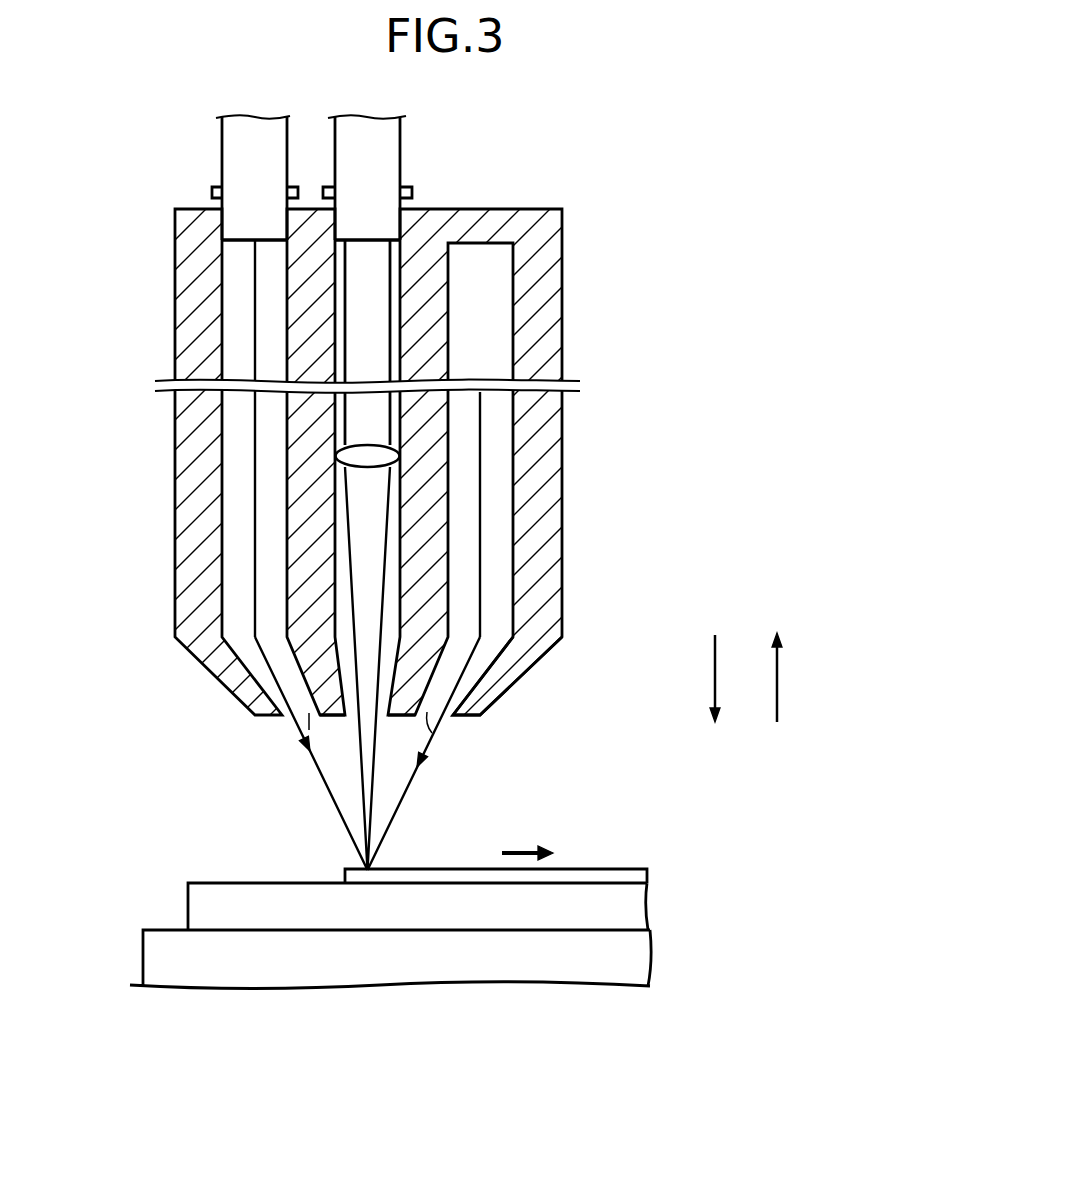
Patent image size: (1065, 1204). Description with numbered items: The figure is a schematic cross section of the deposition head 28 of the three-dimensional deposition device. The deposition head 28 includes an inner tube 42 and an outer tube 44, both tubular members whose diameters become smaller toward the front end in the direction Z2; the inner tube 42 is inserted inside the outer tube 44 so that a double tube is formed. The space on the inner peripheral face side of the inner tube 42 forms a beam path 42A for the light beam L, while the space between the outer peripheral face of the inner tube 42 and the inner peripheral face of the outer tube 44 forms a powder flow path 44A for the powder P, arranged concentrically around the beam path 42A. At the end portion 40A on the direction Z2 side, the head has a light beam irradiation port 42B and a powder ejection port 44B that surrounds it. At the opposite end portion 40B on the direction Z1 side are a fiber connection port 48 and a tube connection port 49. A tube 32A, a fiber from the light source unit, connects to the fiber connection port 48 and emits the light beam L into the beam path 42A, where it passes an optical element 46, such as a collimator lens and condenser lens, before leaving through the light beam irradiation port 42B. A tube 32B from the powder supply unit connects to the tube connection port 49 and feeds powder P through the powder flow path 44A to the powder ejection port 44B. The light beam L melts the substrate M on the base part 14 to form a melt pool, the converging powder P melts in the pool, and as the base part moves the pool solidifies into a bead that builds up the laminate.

The base / stage 14 is at (203, 967).
The deposition head 28 is at (605, 358).
The tube 32A is at (413, 132).
The tube 32B is at (206, 143).
The end portion 40A is at (472, 717).
The end portion 40B is at (543, 207).
The inner tube 42 is at (437, 505).
The beam path 42A is at (393, 313).
The light beam irradiation port 42B is at (382, 707).
The outer tube 44 is at (532, 553).
The powder flow path 44A is at (235, 497).
The powder ejection port 44B is at (308, 760).
The optical element 46 is at (340, 452).
The fiber connection port 48 is at (372, 253).
The tube connection port 49 is at (235, 255).
The light beam L is at (363, 797).
The powder P is at (310, 747).
The substrate M is at (640, 917).
The direction Z1 is at (794, 677).
The direction Z2 is at (732, 678).